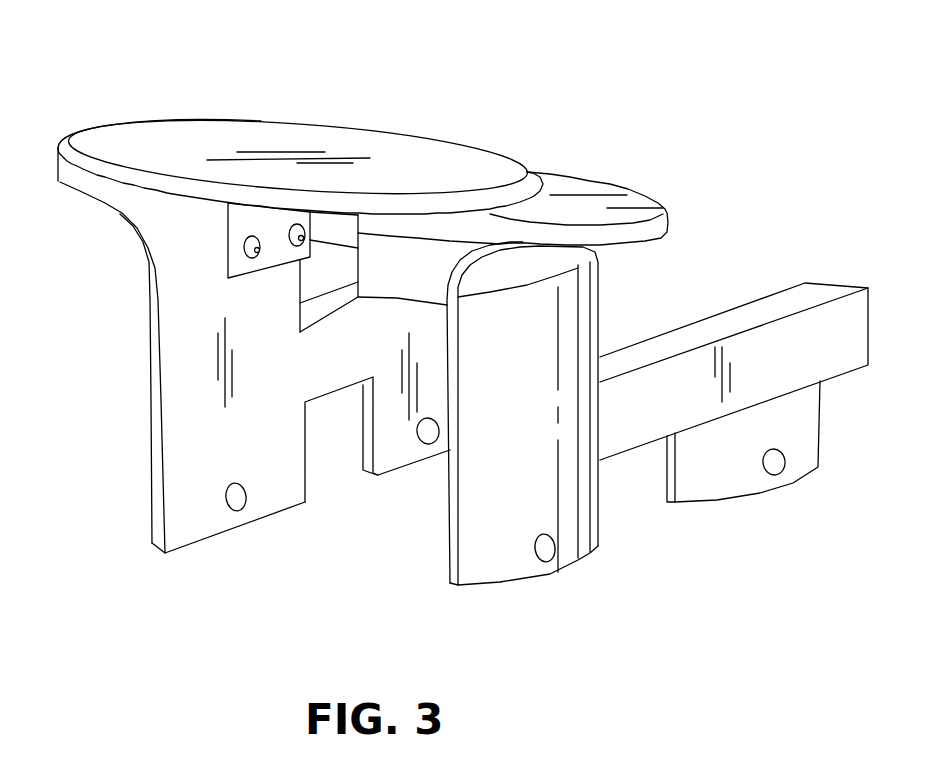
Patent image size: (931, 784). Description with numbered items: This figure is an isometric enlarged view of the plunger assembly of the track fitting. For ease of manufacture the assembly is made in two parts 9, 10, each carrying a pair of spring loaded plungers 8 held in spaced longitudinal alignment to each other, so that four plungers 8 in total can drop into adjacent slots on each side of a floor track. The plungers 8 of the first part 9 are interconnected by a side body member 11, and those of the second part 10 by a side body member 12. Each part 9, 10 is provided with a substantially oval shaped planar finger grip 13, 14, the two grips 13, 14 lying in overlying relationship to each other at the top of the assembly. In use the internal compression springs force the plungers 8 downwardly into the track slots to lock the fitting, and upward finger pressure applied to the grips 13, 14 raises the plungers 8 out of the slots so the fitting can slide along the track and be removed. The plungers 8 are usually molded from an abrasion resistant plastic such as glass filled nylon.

The spring loaded plunger 8 is at (195, 505).
The first plunger part 9 is at (125, 358).
The second plunger part 10 is at (612, 310).
The side body member 11 is at (330, 383).
The side body member 12 is at (637, 435).
The finger grip 13 is at (326, 150).
The finger grip 14 is at (598, 187).